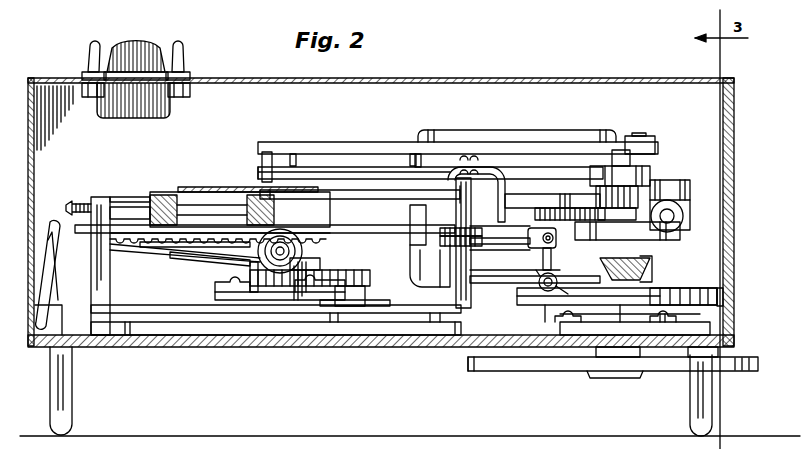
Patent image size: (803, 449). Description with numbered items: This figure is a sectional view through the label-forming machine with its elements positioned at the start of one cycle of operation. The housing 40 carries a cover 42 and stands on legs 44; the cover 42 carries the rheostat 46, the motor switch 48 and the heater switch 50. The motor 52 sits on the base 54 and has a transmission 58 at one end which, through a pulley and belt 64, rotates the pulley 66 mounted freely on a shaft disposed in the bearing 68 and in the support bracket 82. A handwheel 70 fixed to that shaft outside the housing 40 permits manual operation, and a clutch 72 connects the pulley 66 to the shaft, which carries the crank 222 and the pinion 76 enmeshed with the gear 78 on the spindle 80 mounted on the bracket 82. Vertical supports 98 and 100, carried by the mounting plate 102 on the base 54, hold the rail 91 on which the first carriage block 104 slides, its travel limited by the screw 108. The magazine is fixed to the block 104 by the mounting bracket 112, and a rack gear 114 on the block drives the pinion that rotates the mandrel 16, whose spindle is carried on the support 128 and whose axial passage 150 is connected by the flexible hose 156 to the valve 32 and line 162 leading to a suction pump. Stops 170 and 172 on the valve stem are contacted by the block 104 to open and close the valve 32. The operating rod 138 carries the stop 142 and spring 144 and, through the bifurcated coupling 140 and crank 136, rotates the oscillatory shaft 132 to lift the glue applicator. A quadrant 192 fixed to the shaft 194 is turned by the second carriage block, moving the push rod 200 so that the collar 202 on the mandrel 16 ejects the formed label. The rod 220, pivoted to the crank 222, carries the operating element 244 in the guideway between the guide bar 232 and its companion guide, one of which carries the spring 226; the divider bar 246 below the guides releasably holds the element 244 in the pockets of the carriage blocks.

The rotary mandrel 16 is at (258, 250).
The valve 32 is at (55, 222).
The housing 40 is at (730, 175).
The cover 42 is at (440, 78).
The legs 44 is at (66, 392).
The rheostat 46 is at (130, 46).
The motor switch 48 is at (182, 50).
The heater switch 50 is at (90, 48).
The motor 52 is at (560, 136).
The base 54 is at (415, 347).
The transmission 58 is at (686, 186).
The belt 64 is at (722, 300).
The pulley 66 is at (700, 288).
The bearing 68 is at (670, 326).
The handwheel 70 is at (522, 372).
The clutch 72 is at (640, 264).
The pinion 76 is at (632, 204).
The gear 78 is at (535, 214).
The spindle 80 is at (556, 196).
The support bracket 82 is at (627, 231).
The rail 91 is at (118, 208).
The vertical support 98 is at (468, 283).
The vertical support 100 is at (104, 296).
The mounting plate 102 is at (162, 318).
The first carriage block 104 is at (158, 206).
The screw 108 is at (78, 208).
The mounting bracket 112 is at (192, 188).
The rack gear 114 is at (178, 245).
The support 128 is at (258, 270).
The oscillatory shaft 132 is at (582, 290).
The crank 136 is at (552, 262).
The operating rod 138 is at (508, 244).
The bifurcated coupling 140 is at (540, 248).
The stop 142 is at (446, 250).
The spring 144 is at (446, 236).
The axial passage 150 is at (298, 252).
The flexible hose 156 is at (215, 252).
The line 162 is at (55, 300).
The first stop 170 is at (424, 274).
The second stop 172 is at (140, 250).
The quadrant 192 is at (312, 276).
The shaft 194 is at (375, 302).
The push rod 200 is at (282, 272).
The collar or sleeve 202 is at (240, 209).
The rod 220 is at (322, 152).
The crank 222 is at (650, 178).
The spring 226 is at (506, 200).
The guide bar 232 is at (372, 168).
The operating element 244 is at (262, 160).
The divider bar 246 is at (320, 200).